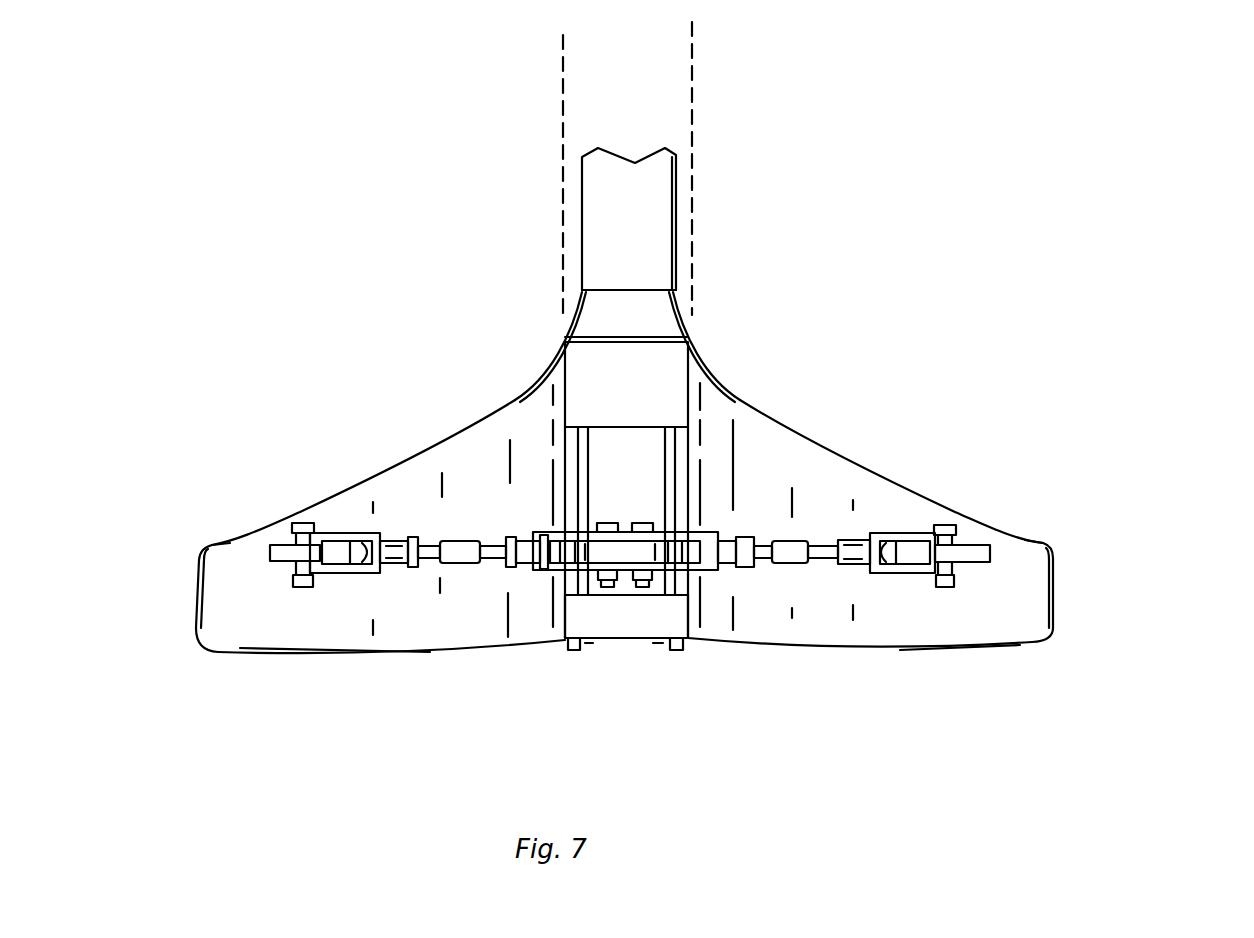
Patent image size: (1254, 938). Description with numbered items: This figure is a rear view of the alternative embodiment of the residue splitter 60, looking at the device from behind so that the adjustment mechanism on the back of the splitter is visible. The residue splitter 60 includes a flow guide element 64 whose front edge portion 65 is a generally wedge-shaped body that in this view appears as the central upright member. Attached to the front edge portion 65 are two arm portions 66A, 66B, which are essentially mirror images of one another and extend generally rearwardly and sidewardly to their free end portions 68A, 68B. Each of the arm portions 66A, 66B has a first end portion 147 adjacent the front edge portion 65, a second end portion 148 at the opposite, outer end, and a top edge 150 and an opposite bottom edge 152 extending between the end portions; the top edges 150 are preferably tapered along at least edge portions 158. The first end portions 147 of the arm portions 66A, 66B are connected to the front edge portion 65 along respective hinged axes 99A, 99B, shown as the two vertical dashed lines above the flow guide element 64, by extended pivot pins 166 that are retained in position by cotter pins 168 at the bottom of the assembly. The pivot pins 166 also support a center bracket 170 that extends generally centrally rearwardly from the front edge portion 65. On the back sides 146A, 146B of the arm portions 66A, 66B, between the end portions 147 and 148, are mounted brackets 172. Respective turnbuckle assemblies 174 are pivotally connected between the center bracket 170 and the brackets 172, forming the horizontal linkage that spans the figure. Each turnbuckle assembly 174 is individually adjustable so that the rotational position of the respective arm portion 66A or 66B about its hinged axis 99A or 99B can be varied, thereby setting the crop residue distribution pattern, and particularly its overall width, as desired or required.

The residue splitter 60 is at (780, 243).
The flow guide element 64 is at (678, 165).
The front edge portion 65 is at (621, 199).
The arm portion 66A is at (277, 612).
The arm portion 66B is at (983, 635).
The free end portion 68A is at (192, 590).
The free end portion 68B is at (1055, 563).
The hinged axis 99A is at (563, 42).
The hinged axis 99B is at (692, 34).
The back side 146A is at (327, 608).
The back side 146B is at (917, 615).
The first end portion 147 is at (555, 378).
The second end portion 148 is at (245, 553).
The top edge 150 is at (462, 433).
The bottom edge 152 is at (430, 653).
The edge portion 158 is at (383, 480).
The pivot pin 166 is at (676, 652).
The cotter pin 168 is at (556, 645).
The center bracket 170 is at (632, 467).
The bracket 172 is at (273, 562).
The turnbuckle assembly 174 is at (440, 563).